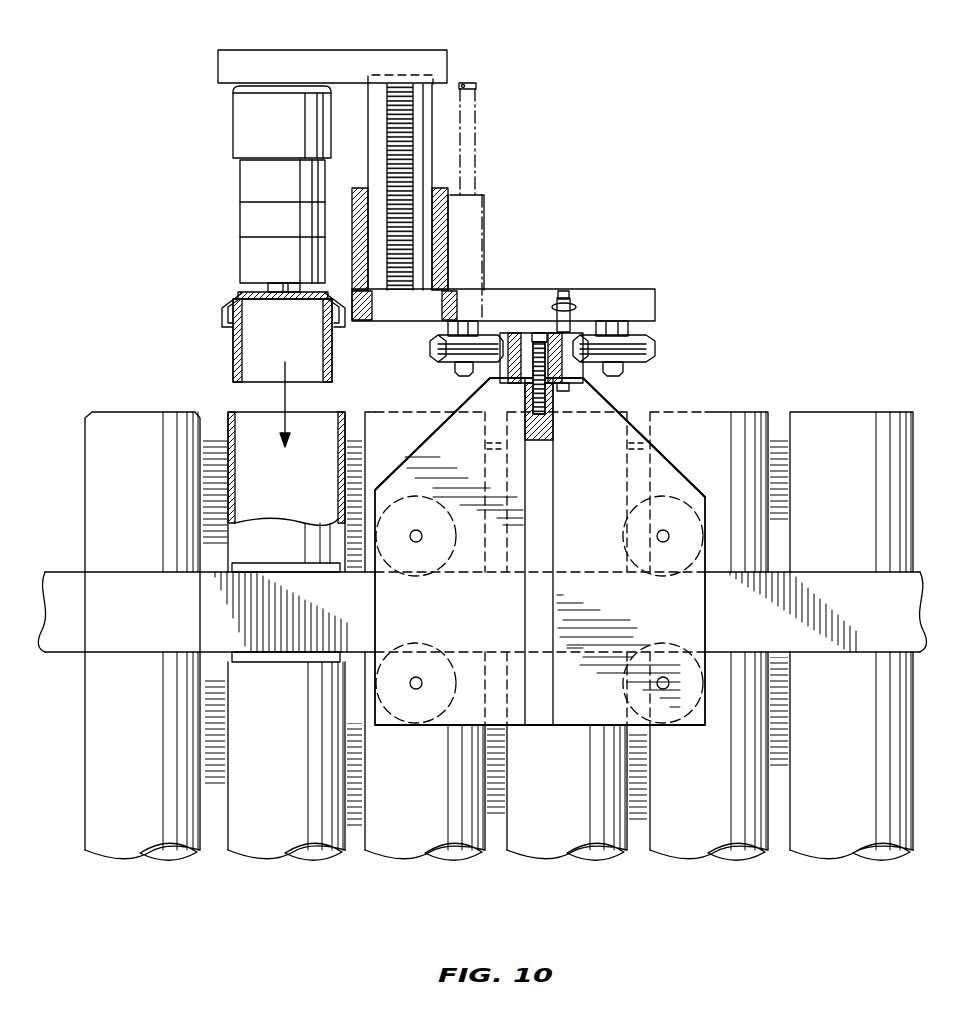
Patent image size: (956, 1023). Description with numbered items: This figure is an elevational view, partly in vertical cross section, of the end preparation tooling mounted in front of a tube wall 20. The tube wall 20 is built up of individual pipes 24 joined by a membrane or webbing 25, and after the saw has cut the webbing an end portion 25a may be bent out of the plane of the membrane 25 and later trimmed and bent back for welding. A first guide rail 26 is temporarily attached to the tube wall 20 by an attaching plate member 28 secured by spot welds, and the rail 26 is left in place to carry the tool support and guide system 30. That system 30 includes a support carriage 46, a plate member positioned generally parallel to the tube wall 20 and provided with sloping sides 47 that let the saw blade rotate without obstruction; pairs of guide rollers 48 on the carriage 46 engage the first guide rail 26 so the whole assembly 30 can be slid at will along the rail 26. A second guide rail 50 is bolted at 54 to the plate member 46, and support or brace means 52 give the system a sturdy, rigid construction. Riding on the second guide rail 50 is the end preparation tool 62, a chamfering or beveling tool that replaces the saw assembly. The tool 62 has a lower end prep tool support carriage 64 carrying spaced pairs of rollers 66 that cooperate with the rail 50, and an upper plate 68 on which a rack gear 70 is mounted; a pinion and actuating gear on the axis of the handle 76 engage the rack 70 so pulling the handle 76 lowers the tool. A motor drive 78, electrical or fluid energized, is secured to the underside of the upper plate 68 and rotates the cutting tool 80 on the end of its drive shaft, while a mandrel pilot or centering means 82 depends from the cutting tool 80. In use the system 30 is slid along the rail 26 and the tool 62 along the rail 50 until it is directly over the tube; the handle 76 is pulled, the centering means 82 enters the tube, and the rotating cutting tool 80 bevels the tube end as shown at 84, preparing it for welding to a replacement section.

The tube wall 20 is at (76, 721).
The pipe 24 is at (250, 840).
The membrane or webbing 25 is at (355, 838).
The end portion of membrane 25a is at (342, 462).
The first guide rail 26 is at (165, 622).
The attaching plate member 28 is at (258, 662).
The tool support and guide system 30 is at (643, 410).
The support carriage 46 is at (583, 715).
The sloping sides 47 is at (430, 437).
The guide rollers 48 is at (432, 558).
The second guide rail 50 is at (566, 342).
The support or brace means 52 is at (540, 710).
The bolt 54 is at (540, 333).
The end preparation tool 62 is at (338, 43).
The end prep tool support carriage 64 is at (593, 289).
The rollers 66 is at (430, 351).
The upper plate 68 is at (218, 64).
The rack gear 70 is at (405, 110).
The handle 76 is at (481, 152).
The motor drive 78 is at (240, 132).
The cutting tool 80 is at (233, 306).
The mandrel pilot or centering means 82 is at (243, 347).
The beveled tube end 84 is at (103, 411).